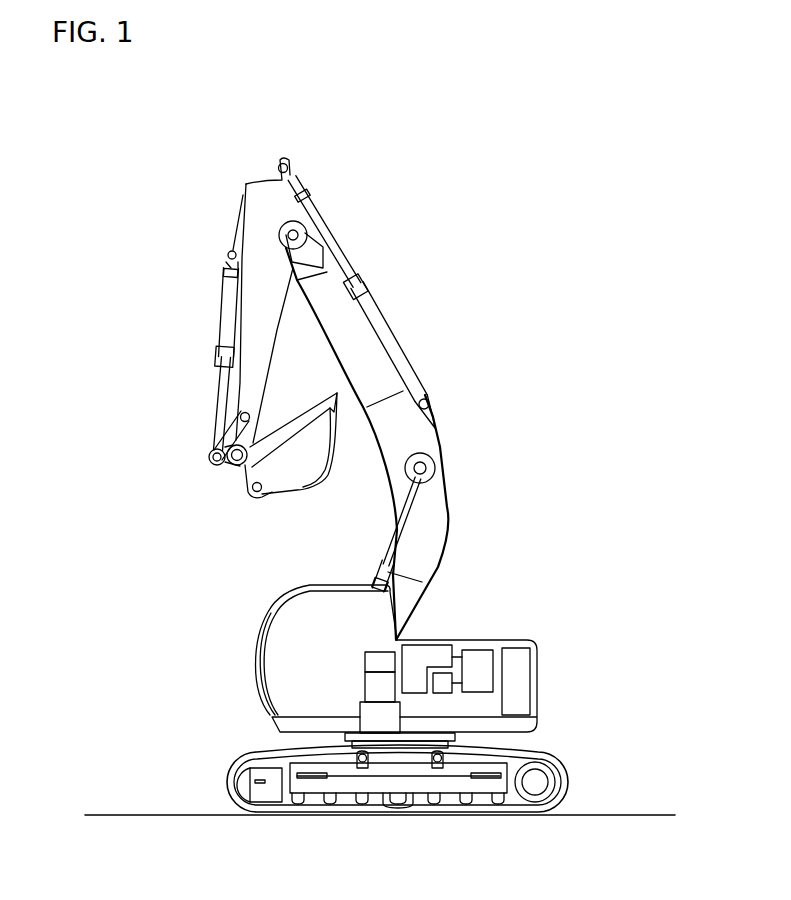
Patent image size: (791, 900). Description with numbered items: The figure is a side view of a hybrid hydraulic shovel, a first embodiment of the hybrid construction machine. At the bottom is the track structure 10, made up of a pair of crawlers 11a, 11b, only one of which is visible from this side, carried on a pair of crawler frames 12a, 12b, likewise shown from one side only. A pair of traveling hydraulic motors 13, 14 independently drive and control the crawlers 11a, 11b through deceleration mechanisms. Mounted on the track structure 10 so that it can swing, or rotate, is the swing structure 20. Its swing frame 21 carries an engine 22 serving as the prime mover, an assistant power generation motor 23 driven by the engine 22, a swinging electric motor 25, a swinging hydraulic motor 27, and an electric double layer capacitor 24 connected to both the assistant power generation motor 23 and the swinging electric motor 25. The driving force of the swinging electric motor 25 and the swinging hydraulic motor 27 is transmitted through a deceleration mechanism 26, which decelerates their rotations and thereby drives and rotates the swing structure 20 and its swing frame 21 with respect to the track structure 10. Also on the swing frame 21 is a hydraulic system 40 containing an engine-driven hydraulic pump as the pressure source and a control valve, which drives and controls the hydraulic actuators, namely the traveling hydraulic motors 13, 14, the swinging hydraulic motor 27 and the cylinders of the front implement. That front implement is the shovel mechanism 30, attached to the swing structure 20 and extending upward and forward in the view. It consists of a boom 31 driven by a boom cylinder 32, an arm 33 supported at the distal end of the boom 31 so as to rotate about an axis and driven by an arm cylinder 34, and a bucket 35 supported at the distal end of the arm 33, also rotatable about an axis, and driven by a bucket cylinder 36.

The track structure 10 is at (439, 784).
The crawler 11a is at (459, 772).
The crawler 11b is at (570, 770).
The crawler frame 12a is at (372, 809).
The crawler frame 12b is at (383, 778).
The traveling hydraulic motor 13 is at (517, 820).
The traveling hydraulic motor 14 is at (533, 787).
The swing structure 20 is at (254, 607).
The swing frame 21 is at (540, 724).
The engine 22 is at (486, 655).
The assistant power generation motor 23 is at (443, 686).
The electric double layer capacitor 24 is at (523, 682).
The swinging electric motor 25 is at (365, 687).
The deceleration mechanism 26 is at (367, 710).
The swinging hydraulic motor 27 is at (364, 657).
The shovel mechanism 30 is at (393, 234).
The boom 31 is at (437, 493).
The boom cylinder 32 is at (388, 552).
The arm 33 is at (258, 206).
The arm cylinder 34 is at (382, 333).
The bucket 35 is at (303, 487).
The bucket cylinder 36 is at (226, 306).
The hydraulic system 40 is at (425, 652).